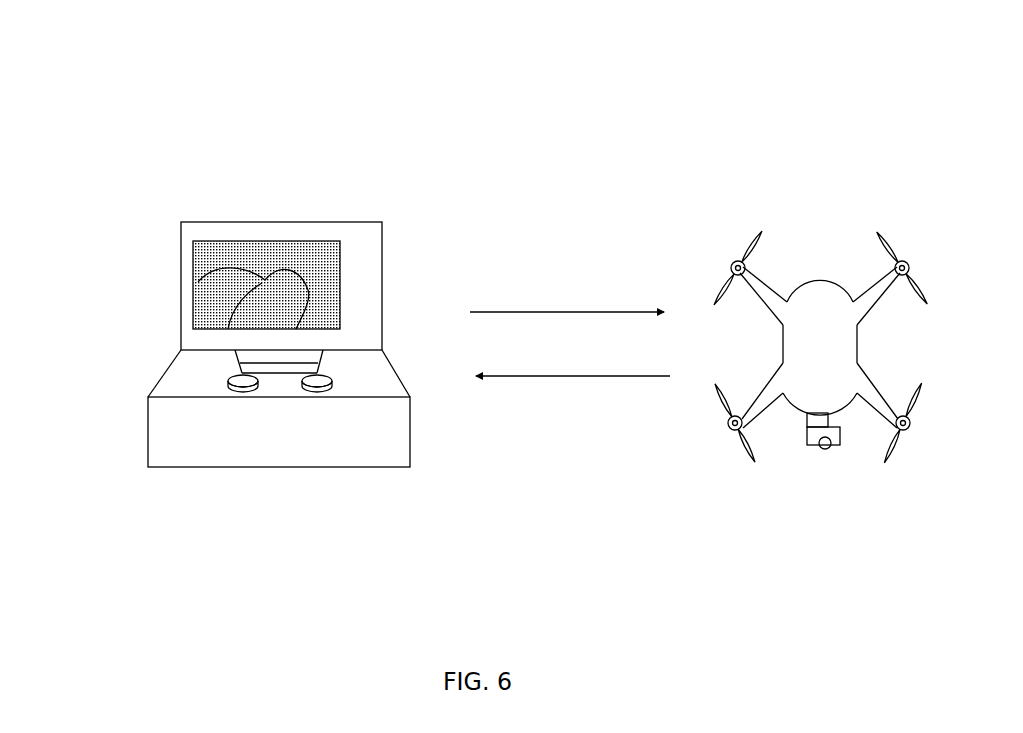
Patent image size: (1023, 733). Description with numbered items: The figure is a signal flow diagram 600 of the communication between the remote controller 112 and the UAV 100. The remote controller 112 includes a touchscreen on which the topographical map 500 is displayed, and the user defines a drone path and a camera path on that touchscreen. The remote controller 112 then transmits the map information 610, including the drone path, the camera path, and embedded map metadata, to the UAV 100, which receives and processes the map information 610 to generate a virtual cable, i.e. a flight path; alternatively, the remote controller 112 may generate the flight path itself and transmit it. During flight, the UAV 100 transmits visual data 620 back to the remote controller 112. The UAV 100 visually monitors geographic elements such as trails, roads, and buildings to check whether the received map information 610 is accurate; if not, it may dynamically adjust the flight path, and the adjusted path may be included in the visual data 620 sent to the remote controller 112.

The signal flow diagram 600 is at (452, 40).
The remote controller 112 is at (128, 442).
The topographical map 500 is at (278, 252).
The map information 610 is at (592, 312).
The visual data 620 is at (595, 376).
The UAV 100 is at (938, 330).